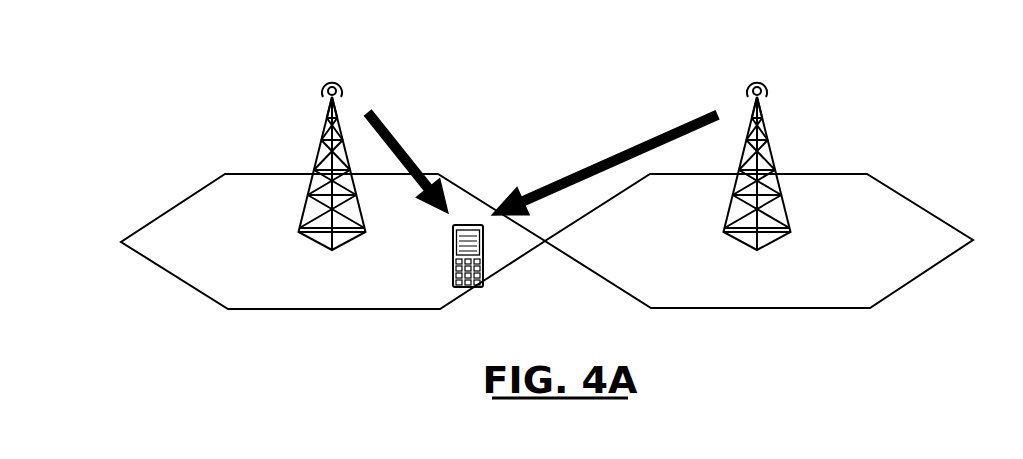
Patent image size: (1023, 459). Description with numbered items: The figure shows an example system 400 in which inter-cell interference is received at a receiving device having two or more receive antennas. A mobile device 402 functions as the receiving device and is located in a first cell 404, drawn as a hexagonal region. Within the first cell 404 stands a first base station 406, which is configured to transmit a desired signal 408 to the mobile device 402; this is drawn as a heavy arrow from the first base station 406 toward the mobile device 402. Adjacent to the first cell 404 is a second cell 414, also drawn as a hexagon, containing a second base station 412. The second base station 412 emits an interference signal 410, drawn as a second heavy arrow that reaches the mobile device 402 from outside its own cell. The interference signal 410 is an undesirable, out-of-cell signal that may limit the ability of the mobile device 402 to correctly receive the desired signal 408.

The system 400 is at (101, 82).
The mobile device 402 is at (468, 225).
The first cell 404 is at (203, 207).
The first base station 406 is at (326, 72).
The desired signal 408 is at (387, 125).
The interference signal 410 is at (640, 143).
The second base station 412 is at (752, 77).
The second cell 414 is at (892, 203).